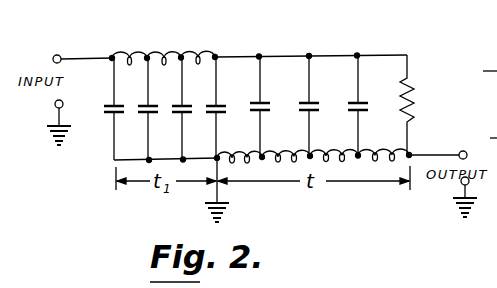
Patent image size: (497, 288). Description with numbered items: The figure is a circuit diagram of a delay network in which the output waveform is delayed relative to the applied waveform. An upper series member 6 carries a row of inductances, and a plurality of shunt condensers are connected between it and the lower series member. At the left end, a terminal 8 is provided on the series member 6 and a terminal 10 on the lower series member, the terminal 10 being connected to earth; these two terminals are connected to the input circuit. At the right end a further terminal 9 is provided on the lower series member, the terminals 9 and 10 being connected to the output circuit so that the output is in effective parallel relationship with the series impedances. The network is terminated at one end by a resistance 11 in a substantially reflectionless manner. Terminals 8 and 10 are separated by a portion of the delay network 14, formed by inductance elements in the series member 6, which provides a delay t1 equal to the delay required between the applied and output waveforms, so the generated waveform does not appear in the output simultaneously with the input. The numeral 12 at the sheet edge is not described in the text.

The series member 6 is at (322, 56).
The terminal 8 is at (114, 57).
The portion of the delay network 14 is at (158, 56).
The terminal 10 is at (216, 158).
The resistance 11 is at (412, 111).
The terminal 9 is at (410, 158).
The adjacent element (partially shown) 12 is at (487, 104).